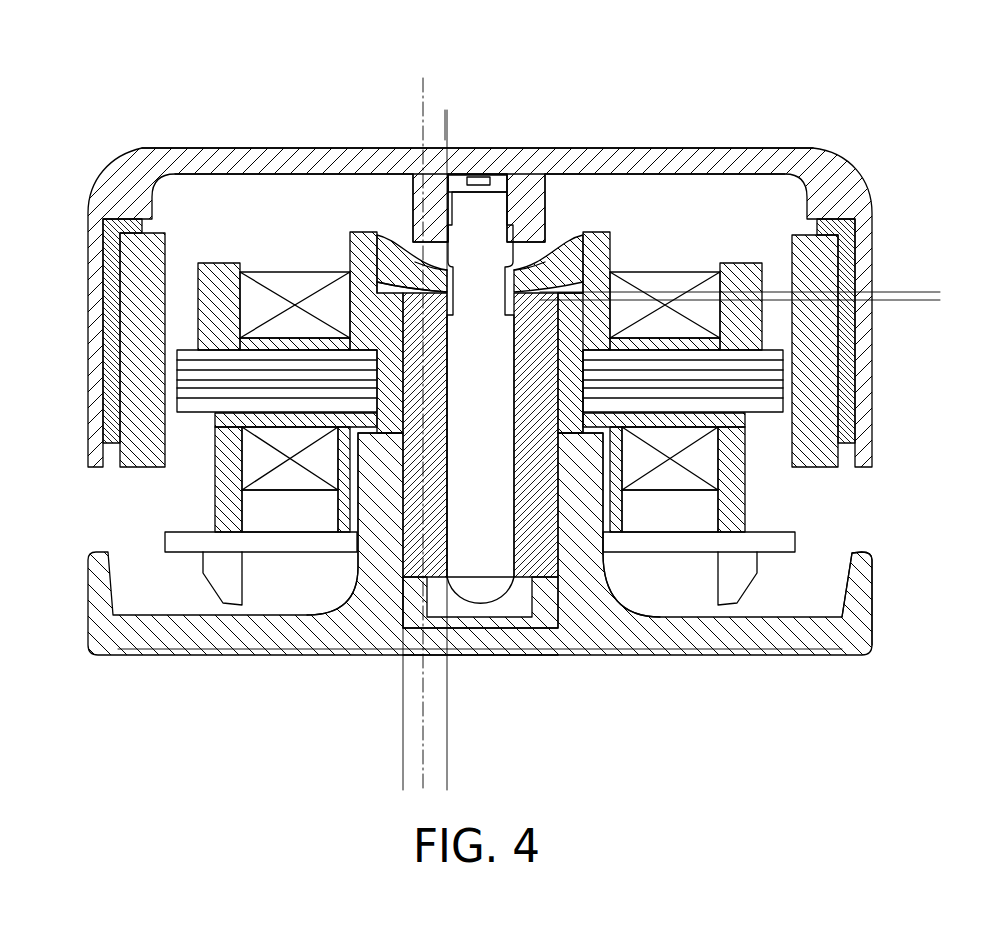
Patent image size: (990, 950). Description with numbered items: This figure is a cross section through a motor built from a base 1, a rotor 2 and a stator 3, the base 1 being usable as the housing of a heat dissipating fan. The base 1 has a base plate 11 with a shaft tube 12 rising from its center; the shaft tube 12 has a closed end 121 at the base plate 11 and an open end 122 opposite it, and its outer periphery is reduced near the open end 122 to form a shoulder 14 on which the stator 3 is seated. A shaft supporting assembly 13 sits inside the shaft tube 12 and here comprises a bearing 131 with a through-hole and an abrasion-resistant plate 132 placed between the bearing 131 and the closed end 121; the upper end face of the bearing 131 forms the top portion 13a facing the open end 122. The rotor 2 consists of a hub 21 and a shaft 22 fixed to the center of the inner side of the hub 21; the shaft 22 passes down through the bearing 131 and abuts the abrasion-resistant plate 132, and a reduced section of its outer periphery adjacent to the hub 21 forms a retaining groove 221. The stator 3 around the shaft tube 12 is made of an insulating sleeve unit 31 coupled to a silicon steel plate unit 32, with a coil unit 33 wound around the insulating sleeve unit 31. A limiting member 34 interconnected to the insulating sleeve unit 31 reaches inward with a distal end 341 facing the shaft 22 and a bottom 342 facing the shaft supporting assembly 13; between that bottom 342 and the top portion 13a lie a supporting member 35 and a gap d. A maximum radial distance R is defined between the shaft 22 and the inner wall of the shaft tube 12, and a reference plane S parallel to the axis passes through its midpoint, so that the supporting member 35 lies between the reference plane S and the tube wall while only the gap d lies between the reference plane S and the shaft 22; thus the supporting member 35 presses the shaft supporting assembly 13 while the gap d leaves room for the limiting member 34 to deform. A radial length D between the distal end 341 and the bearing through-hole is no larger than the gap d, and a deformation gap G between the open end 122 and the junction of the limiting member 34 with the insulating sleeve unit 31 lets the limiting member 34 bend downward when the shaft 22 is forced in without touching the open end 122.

The base 1 is at (885, 625).
The base plate 11 is at (803, 613).
The shaft tube 12 is at (357, 525).
The closed end 121 is at (498, 689).
The open end 122 is at (570, 300).
The shaft supporting assembly 13 is at (421, 444).
The bearing 131 is at (413, 517).
The abrasion-resistant plate 132 is at (408, 615).
The top portion 13a is at (553, 285).
The shoulder 14 is at (342, 423).
The rotor 2 is at (770, 135).
The hub 21 is at (688, 162).
The shaft 22 is at (485, 570).
The retaining groove 221 is at (522, 290).
The stator 3 is at (760, 242).
The insulating sleeve unit 31 is at (735, 263).
The silicon steel plate unit 32 is at (775, 367).
The coil unit 33 is at (663, 273).
The limiting member 34 is at (400, 272).
The distal end 341 is at (425, 270).
The bottom 342 is at (462, 290).
The supporting member 35 is at (415, 262).
The deformation gap G is at (378, 283).
The radial length D is at (488, 127).
The reference plane S is at (423, 105).
The maximum radial distance R is at (358, 773).
The gap d is at (935, 268).